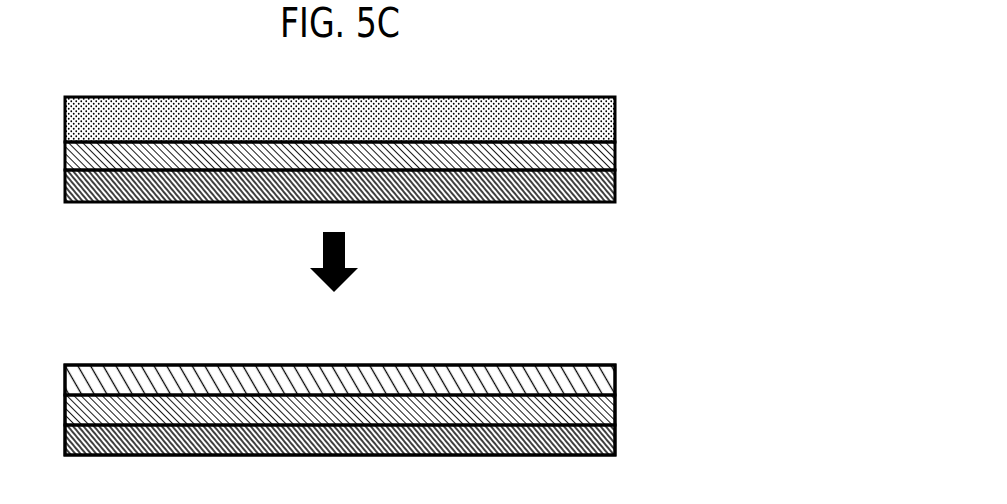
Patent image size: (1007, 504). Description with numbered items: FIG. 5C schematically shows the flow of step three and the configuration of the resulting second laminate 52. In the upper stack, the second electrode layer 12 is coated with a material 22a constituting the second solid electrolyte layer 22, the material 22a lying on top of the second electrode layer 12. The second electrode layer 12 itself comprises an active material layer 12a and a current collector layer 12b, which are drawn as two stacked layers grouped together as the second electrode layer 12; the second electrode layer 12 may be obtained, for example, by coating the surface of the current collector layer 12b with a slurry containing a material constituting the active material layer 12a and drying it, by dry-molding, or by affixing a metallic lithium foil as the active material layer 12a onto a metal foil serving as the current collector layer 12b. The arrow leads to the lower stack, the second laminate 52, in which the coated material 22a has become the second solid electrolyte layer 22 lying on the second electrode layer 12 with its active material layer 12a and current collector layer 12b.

The second laminate 52 is at (353, 341).
The second solid electrolyte layer 22 is at (617, 378).
The material constituting the second solid electrolyte layer 22a is at (617, 117).
The second electrode layer 12 is at (423, 298).
The active material layer 12a is at (617, 182).
The current collector layer 12b is at (617, 155).